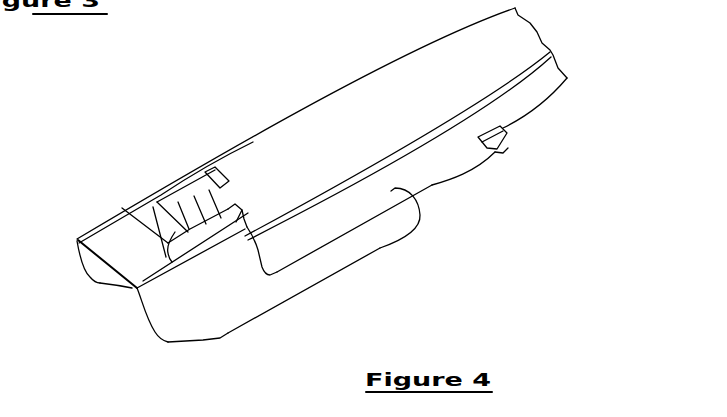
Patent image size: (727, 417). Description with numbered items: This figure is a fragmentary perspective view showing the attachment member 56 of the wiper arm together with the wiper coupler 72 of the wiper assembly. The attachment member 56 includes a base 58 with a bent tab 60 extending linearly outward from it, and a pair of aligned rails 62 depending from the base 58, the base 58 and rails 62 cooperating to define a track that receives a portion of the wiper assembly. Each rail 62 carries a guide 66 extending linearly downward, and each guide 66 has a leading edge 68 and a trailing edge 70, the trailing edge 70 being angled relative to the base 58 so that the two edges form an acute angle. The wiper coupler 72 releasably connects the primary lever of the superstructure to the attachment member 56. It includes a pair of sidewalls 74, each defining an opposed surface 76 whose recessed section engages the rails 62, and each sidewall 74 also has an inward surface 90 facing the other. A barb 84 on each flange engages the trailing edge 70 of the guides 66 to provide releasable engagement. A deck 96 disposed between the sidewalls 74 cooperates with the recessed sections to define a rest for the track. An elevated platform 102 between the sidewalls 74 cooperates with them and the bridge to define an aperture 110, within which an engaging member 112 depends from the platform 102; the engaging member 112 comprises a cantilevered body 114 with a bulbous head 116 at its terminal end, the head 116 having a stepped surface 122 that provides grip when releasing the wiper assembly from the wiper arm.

The attachment member 56 is at (311, 64).
The base 58 is at (401, 56).
The bent tab 60 is at (217, 195).
The rails 62 is at (430, 187).
The guide 66 is at (486, 165).
The leading edge 68 is at (443, 183).
The trailing edge 70 is at (497, 152).
The wiper coupler 72 is at (112, 118).
The sidewalls 74 is at (98, 235).
The surface 76 is at (165, 328).
The barb 84 is at (507, 133).
The inward surface 90 is at (104, 273).
The deck 96 is at (119, 198).
The elevated platform 102 is at (104, 240).
The aperture 110 is at (133, 214).
The engaging member 112 is at (143, 222).
The cantilevered body 114 is at (228, 334).
The bulbous head 116 is at (182, 195).
The stepped surface 122 is at (198, 195).